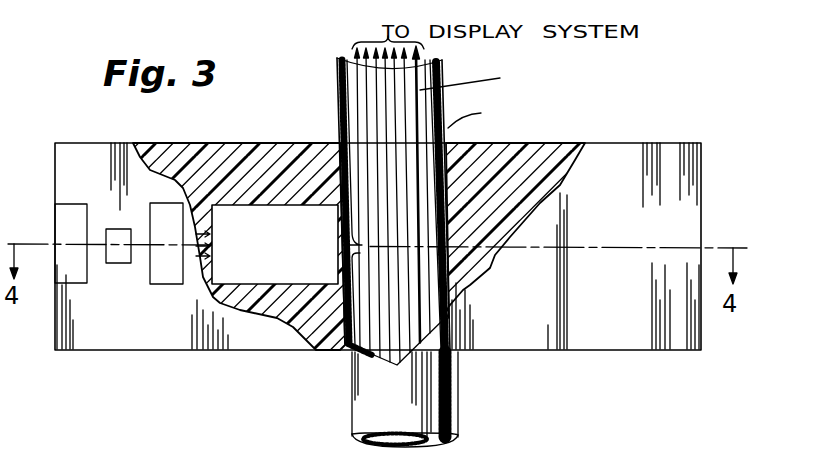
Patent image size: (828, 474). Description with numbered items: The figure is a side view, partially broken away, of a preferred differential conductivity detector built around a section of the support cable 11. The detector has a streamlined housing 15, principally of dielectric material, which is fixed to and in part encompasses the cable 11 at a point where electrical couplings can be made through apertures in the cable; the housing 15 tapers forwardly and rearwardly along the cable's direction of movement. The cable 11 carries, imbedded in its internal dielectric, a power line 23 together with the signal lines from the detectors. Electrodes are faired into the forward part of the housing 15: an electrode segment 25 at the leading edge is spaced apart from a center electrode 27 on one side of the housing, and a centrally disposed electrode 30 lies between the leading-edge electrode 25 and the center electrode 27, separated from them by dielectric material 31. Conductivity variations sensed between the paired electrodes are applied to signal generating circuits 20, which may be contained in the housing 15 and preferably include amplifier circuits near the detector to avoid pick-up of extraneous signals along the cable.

The support cable 11 is at (447, 130).
The streamlined housing 15 is at (636, 144).
The signal generating circuits 20 is at (252, 203).
The power line 23 is at (420, 90).
The electrode segment 25 is at (58, 218).
The center electrode 27 is at (163, 283).
The centrally disposed electrode 30 is at (120, 263).
The dielectric material 31 is at (320, 153).